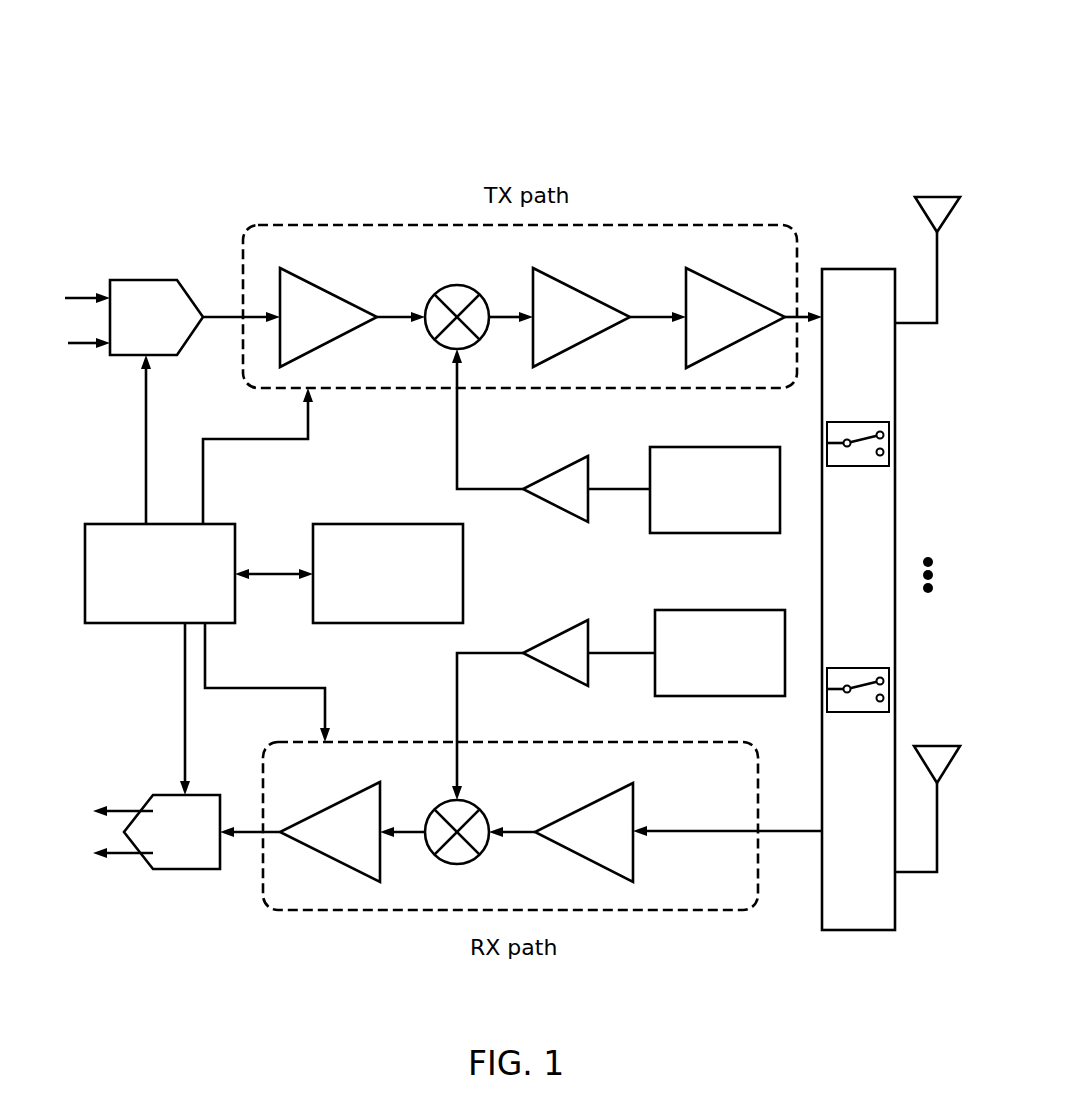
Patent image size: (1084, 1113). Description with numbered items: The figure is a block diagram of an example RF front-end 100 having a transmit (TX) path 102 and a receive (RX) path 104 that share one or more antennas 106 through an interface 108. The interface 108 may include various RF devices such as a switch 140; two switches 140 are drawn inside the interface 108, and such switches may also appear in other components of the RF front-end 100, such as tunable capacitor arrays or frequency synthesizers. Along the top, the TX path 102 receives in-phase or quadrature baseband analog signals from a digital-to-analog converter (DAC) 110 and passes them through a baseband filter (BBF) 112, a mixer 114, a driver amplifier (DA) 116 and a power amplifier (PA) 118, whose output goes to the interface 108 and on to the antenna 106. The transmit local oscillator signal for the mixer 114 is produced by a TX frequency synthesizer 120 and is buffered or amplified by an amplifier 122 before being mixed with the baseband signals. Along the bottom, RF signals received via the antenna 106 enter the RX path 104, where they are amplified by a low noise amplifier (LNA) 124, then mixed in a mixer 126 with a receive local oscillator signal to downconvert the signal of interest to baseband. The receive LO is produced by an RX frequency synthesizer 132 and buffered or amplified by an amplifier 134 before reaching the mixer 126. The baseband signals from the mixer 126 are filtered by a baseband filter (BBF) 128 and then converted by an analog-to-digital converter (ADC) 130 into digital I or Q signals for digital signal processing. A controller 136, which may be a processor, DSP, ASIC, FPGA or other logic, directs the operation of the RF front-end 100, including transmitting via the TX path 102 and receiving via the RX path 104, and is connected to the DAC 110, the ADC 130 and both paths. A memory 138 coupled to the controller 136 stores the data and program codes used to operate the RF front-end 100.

The RF front-end 100 is at (890, 31).
The transmit (TX) path 102 is at (718, 226).
The receive (RX) path 104 is at (688, 742).
The antenna 106 is at (937, 196).
The interface 108 is at (850, 269).
The digital-to-analog converter (DAC) 110 is at (138, 280).
The baseband filter (BBF) 112 is at (338, 293).
The mixer 114 is at (457, 285).
The driver amplifier (DA) 116 is at (590, 293).
The power amplifier (PA) 118 is at (722, 292).
The TX frequency synthesizer 120 is at (745, 447).
The amplifier 122 is at (573, 462).
The low noise amplifier (LNA) 124 is at (634, 806).
The mixer 126 is at (473, 804).
The baseband filter (BBF) 128 is at (346, 796).
The analog-to-digital converter (ADC) 130 is at (165, 869).
The RX frequency synthesizer 132 is at (750, 610).
The amplifier 134 is at (573, 626).
The controller 136 is at (128, 524).
The memory 138 is at (393, 524).
The switch 140 is at (857, 421).